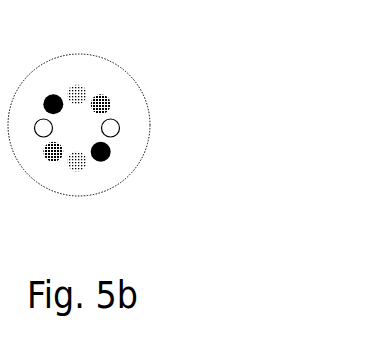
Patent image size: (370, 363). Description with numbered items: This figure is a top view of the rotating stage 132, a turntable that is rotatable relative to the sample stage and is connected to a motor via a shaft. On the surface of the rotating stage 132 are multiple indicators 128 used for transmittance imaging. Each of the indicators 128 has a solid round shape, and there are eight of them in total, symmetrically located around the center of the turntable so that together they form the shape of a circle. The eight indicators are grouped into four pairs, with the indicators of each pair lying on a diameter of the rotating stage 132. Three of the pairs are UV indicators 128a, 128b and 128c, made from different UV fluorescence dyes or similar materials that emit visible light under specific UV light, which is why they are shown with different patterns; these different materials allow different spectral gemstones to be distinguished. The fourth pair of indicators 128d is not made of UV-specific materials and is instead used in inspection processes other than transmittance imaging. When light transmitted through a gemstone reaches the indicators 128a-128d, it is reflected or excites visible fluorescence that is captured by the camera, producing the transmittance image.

The indicators 128 is at (92, 167).
The UV indicators 128a is at (77, 86).
The UV indicators 128b is at (111, 105).
The UV indicators 128c is at (109, 152).
The indicators 128d is at (40, 127).
The rotating stage 132 is at (127, 73).